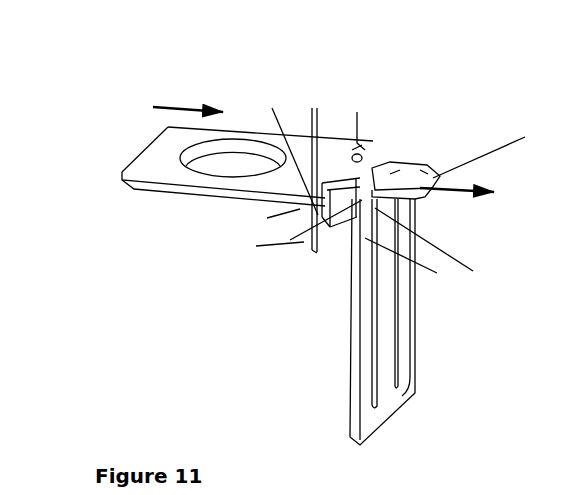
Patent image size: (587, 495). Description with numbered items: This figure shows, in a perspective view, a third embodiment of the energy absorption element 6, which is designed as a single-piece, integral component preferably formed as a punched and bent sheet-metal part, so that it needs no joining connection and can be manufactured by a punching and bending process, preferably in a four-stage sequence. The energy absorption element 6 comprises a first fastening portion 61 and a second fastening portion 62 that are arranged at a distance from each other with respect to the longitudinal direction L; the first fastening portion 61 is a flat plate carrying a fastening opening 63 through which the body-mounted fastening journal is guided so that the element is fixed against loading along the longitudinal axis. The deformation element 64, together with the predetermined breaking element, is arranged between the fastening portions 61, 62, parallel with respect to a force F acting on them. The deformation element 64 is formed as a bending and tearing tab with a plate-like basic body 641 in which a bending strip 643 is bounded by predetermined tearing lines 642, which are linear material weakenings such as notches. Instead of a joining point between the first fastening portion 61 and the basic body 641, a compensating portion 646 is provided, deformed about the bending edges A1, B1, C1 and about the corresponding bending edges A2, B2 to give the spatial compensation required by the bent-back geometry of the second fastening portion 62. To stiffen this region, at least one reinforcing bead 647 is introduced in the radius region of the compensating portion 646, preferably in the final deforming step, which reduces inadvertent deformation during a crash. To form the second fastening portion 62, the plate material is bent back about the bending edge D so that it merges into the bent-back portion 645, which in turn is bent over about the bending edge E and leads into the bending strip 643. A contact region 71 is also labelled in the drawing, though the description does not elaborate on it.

The energy absorption element 6 is at (366, 55).
The first fastening portion 61 is at (165, 177).
The second fastening portion 62 is at (424, 170).
The fastening opening 63 is at (228, 163).
The deformation element 64 is at (350, 370).
The basic body 641 is at (378, 303).
The predetermined tearing lines 642 is at (360, 357).
The bending strip (tearing tab) 643 is at (377, 337).
The bent-back portion 645 is at (405, 202).
The compensating portion 646 is at (363, 288).
The reinforcing bead 647 is at (317, 180).
The contact 71 is at (395, 172).
The bending edge A1 is at (289, 152).
The bending edge A2 is at (358, 125).
The bending edge B1 is at (267, 247).
The bending edge B2 is at (266, 220).
The bending edge C1 is at (414, 265).
The bending edge D is at (487, 154).
The bending edge E is at (429, 247).
The force F is at (457, 207).
The longitudinal direction L is at (183, 103).